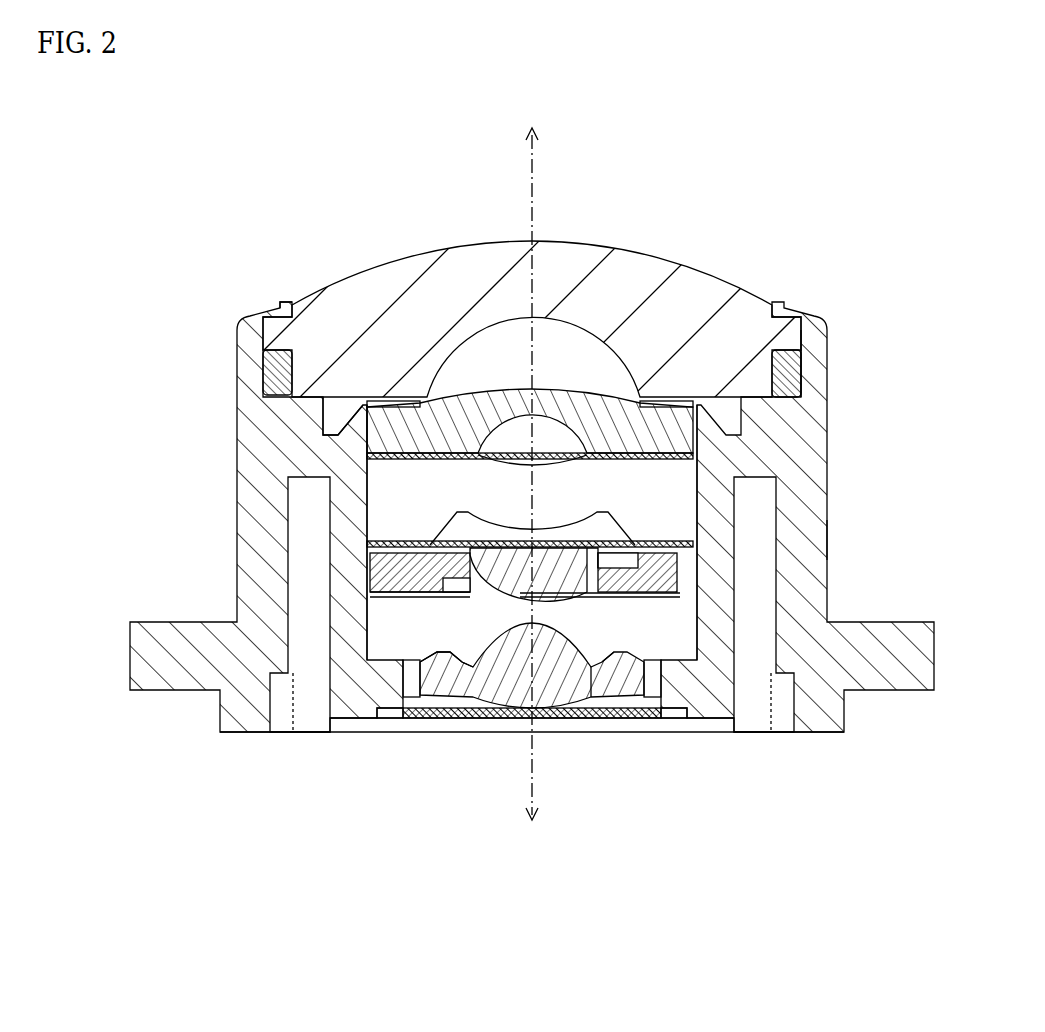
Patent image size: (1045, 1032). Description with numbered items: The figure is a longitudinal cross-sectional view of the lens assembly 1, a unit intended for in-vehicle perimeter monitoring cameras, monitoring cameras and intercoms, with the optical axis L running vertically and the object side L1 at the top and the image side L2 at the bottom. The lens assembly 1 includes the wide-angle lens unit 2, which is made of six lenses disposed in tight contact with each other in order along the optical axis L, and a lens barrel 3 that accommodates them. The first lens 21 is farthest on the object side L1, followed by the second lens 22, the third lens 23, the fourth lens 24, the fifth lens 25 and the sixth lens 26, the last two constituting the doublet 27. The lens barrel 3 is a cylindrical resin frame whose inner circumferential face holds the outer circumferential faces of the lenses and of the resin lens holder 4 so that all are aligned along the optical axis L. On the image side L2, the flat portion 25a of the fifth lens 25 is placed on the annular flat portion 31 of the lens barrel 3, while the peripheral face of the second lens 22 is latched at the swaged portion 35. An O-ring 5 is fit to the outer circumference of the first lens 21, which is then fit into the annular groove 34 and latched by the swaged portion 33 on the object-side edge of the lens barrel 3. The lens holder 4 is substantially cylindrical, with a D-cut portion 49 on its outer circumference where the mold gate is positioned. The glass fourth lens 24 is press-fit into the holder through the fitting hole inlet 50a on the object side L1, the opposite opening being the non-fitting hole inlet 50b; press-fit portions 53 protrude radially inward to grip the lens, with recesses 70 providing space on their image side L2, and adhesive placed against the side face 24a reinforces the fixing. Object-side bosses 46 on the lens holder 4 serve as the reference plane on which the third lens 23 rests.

The lens assembly 1 is at (133, 111).
The wide-angle lens unit 2 is at (762, 137).
The lens barrel 3 is at (237, 335).
The lens holder 4 is at (712, 554).
The O-ring 5 is at (790, 365).
The first lens 21 is at (539, 323).
The second lens 22 is at (566, 410).
The third lens 23 is at (585, 535).
The fourth lens 24 is at (600, 598).
The side face of the fourth lens 24a is at (372, 543).
The fifth lens 25 is at (690, 585).
The flat portion 25a is at (425, 655).
The sixth lens 26 is at (705, 640).
The doublet 27 is at (760, 185).
The annular flat portion 31 is at (235, 690).
The swaged portion 33 is at (281, 303).
The annular groove 34 is at (810, 400).
The swaged portion 35 is at (357, 390).
The object-side bosses 46 is at (330, 535).
The D-cut portion 49 is at (735, 582).
The fitting hole inlet 50a is at (372, 456).
The non-fitting hole inlet 50b is at (372, 594).
The press-fit portions 53 is at (410, 655).
The recesses 70 is at (372, 572).
The optical axis L is at (532, 785).
The object side L1 is at (533, 457).
The image side L2 is at (533, 838).